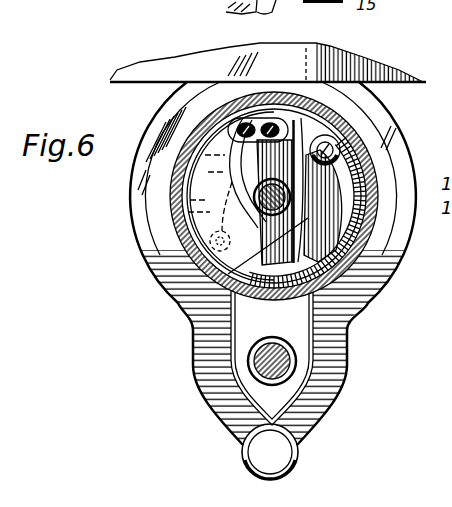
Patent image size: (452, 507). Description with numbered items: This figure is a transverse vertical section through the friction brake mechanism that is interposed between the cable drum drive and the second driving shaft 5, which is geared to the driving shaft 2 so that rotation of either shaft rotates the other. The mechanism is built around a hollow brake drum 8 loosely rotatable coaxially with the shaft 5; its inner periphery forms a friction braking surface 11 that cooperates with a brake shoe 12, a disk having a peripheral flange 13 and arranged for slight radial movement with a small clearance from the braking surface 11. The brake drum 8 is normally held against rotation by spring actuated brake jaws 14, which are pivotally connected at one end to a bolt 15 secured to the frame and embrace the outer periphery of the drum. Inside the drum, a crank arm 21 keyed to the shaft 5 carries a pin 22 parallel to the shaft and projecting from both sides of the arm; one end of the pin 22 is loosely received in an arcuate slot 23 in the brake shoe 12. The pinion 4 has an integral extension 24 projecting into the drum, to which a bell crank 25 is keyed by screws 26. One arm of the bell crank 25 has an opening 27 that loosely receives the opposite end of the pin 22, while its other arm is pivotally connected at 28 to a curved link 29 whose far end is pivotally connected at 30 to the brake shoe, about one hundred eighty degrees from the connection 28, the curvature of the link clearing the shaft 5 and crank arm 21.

The driving shaft 2 is at (264, 338).
The pinion 4 is at (312, 31).
The second driving shaft 5 is at (285, 196).
The brake drum 8 is at (362, 265).
The friction braking surface 11 is at (372, 243).
The brake shoe 12 is at (330, 265).
The peripheral flange 13 is at (352, 268).
The brake jaws 14 is at (203, 370).
The bolt 15 is at (289, 461).
The crank arm 21 is at (190, 118).
The pin 22 is at (243, 128).
The arcuate slot 23 is at (140, 169).
The integral extension 24 is at (300, 183).
The bell crank 25 is at (187, 227).
The screws 26 is at (225, 230).
The opening 27 is at (268, 137).
The pivotal connection 28 is at (174, 267).
The curved link 29 is at (272, 298).
The pivotal connection 30 is at (339, 148).